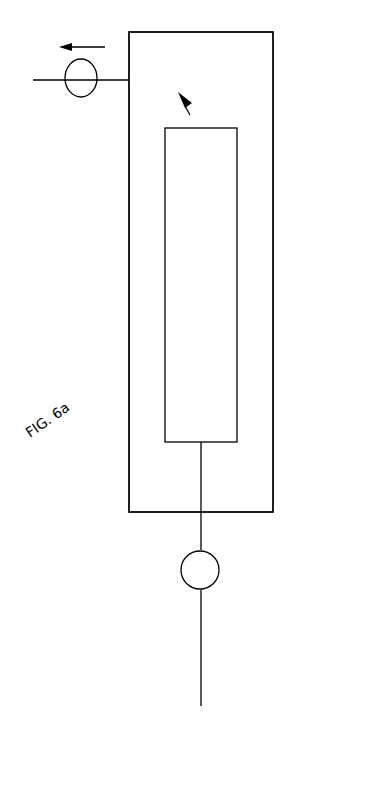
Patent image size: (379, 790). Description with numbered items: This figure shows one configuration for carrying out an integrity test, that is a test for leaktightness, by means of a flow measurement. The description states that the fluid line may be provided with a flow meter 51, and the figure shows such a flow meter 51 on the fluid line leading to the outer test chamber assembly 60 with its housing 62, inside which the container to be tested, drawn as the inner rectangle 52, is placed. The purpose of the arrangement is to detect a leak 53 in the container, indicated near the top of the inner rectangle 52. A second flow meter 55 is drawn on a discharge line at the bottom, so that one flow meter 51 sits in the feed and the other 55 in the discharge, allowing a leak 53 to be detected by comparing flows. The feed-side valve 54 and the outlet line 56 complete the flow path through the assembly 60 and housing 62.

The flow meter 51 is at (81, 100).
The inner chamber 52 is at (237, 322).
The leak 53 is at (133, 137).
The inlet valve 54 is at (66, 60).
The gas sensor 55 is at (216, 578).
The outlet line 56 is at (222, 574).
The device 60 is at (80, 468).
The housing 62 is at (273, 490).